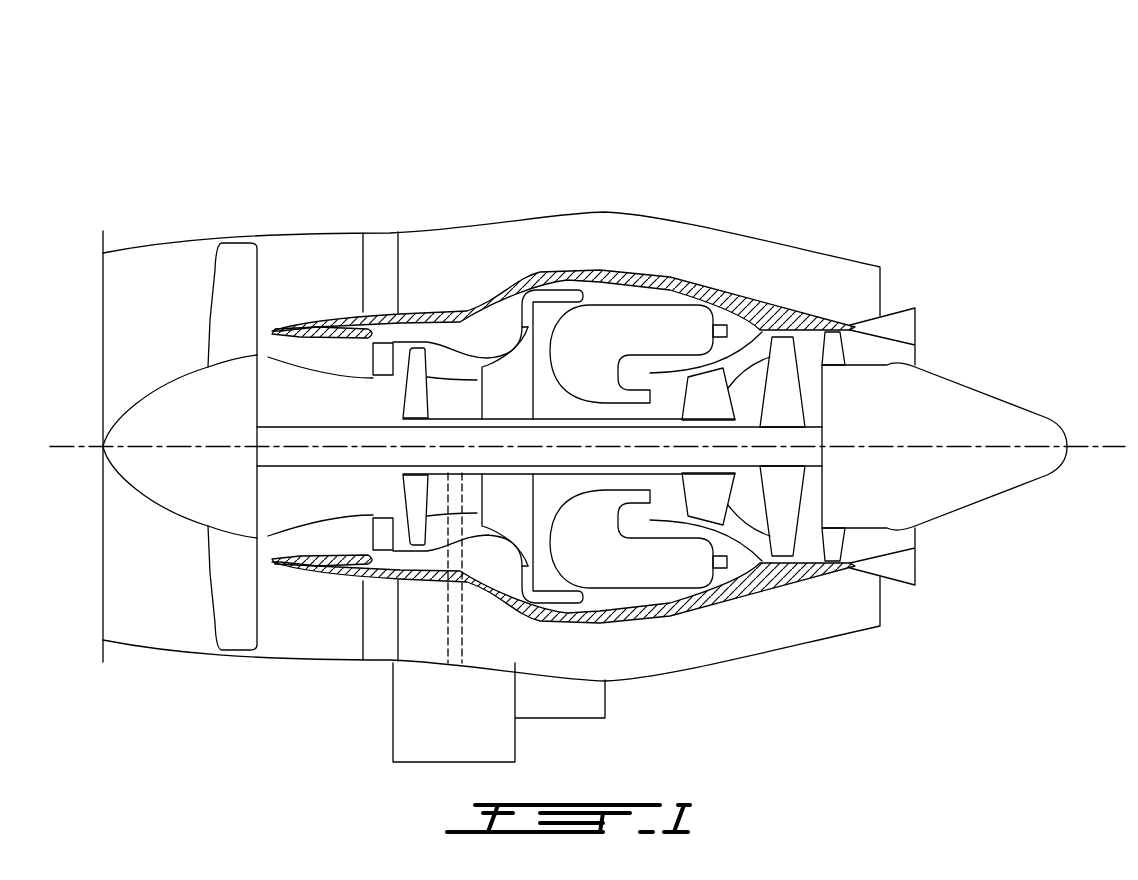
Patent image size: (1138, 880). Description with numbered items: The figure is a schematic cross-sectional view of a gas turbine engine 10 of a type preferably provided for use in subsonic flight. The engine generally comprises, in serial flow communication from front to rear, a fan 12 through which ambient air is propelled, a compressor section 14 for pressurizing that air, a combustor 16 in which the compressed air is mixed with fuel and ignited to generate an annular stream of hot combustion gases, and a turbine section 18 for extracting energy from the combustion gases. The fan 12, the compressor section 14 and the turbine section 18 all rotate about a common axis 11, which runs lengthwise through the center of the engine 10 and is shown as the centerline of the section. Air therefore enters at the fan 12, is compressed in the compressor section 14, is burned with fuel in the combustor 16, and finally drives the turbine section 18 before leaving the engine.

The gas turbine engine 10 is at (770, 149).
The axis 11 is at (1097, 446).
The fan 12 is at (227, 578).
The compressor section 14 is at (443, 360).
The combustor 16 is at (633, 325).
The turbine section 18 is at (747, 502).